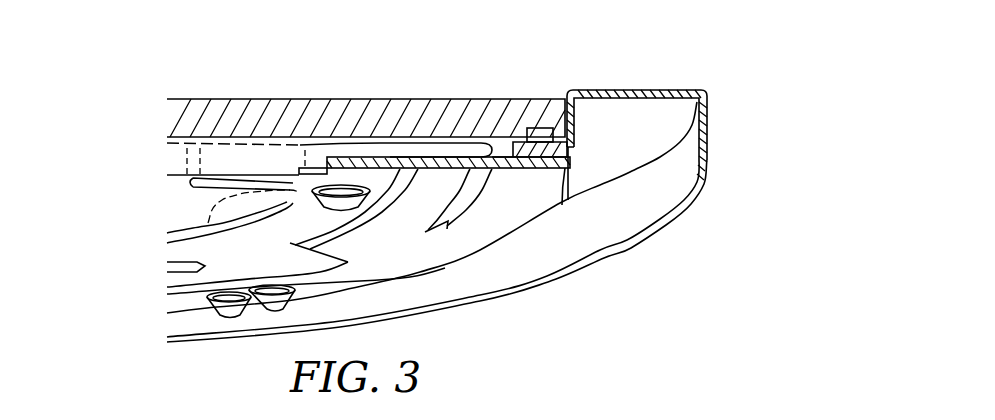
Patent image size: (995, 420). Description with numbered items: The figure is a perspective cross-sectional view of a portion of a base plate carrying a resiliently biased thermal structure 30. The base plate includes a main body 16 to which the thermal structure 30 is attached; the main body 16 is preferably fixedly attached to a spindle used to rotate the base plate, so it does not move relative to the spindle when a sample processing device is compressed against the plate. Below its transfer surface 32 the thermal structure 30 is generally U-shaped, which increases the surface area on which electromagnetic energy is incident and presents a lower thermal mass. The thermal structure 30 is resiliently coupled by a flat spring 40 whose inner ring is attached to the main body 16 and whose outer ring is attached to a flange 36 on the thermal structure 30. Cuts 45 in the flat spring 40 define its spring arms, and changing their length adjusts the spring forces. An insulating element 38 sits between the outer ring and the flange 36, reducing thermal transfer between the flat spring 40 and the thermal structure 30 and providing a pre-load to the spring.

The main body 16 is at (437, 120).
The thermal structure 30 is at (707, 136).
The transfer surface 32 is at (645, 90).
The flange 36 is at (557, 127).
The insulating element 38 is at (522, 150).
The flat spring 40 is at (525, 200).
The cuts 45 is at (358, 220).